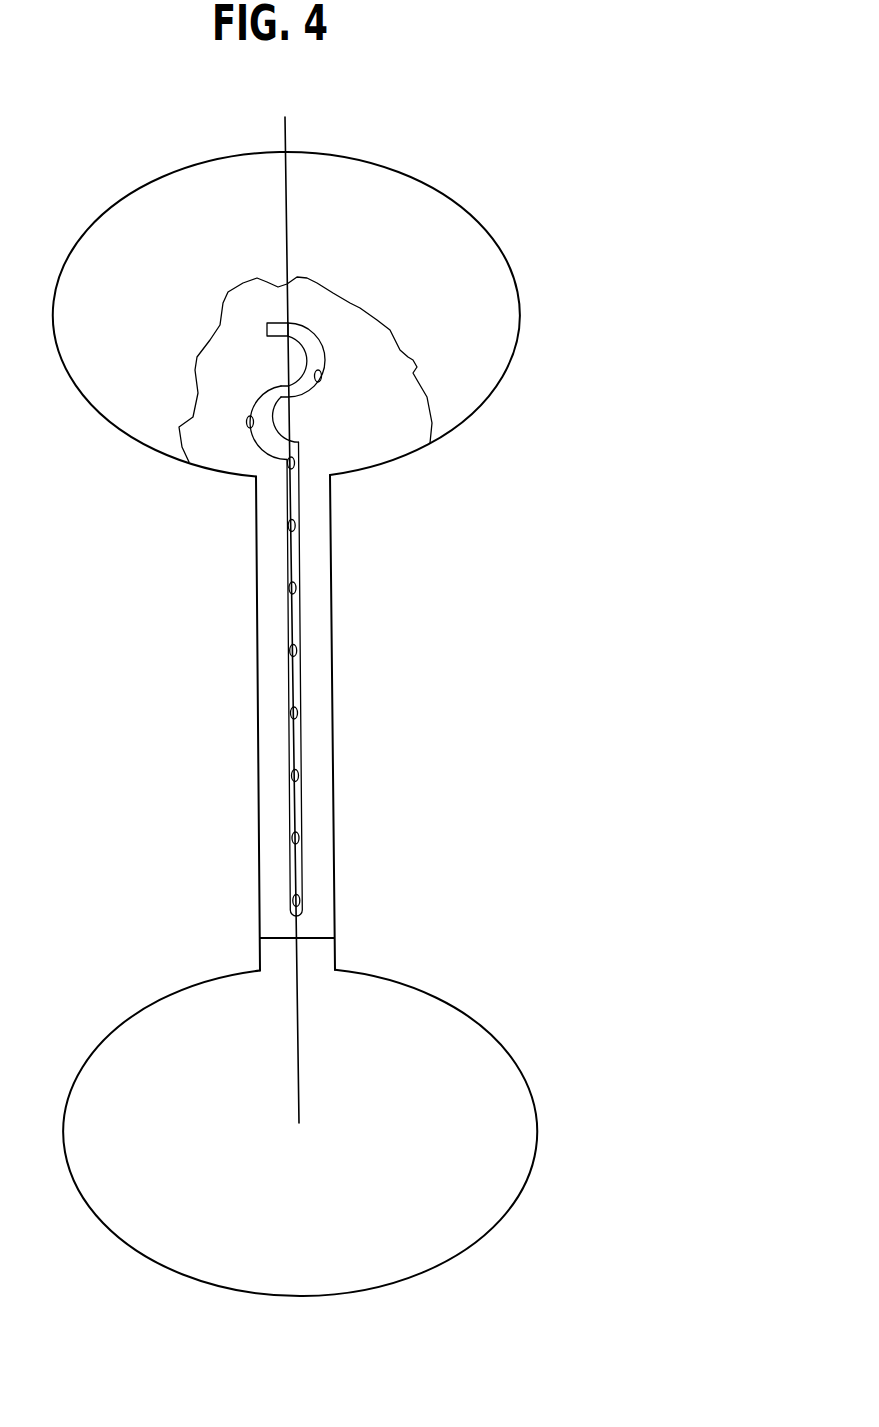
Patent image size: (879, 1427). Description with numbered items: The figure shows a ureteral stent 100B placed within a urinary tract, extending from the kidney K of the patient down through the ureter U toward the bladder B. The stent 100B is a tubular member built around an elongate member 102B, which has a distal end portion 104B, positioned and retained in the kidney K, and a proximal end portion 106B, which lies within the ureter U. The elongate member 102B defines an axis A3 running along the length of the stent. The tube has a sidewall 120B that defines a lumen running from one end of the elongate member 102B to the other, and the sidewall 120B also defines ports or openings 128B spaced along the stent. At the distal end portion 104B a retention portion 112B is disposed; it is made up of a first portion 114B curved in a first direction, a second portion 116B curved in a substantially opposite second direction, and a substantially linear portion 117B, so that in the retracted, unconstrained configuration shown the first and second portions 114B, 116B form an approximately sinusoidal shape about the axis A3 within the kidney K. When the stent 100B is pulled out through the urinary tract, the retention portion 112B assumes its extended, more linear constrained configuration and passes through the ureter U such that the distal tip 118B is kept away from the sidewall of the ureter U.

The ureteral stent 100B is at (442, 652).
The elongate member 102B is at (302, 550).
The distal end portion 104B is at (387, 395).
The proximal end portion 106B is at (312, 872).
The retention portion 112B is at (293, 398).
The first portion 114B is at (247, 425).
The second portion 116B is at (307, 334).
The substantially linear portion 117B is at (300, 512).
The distal tip 118B is at (267, 331).
The sidewall 120B is at (287, 625).
The ports or openings 128B is at (298, 775).
The kidney K is at (458, 203).
The bladder B is at (483, 1024).
The ureter U is at (332, 682).
The axis A3 is at (296, 622).